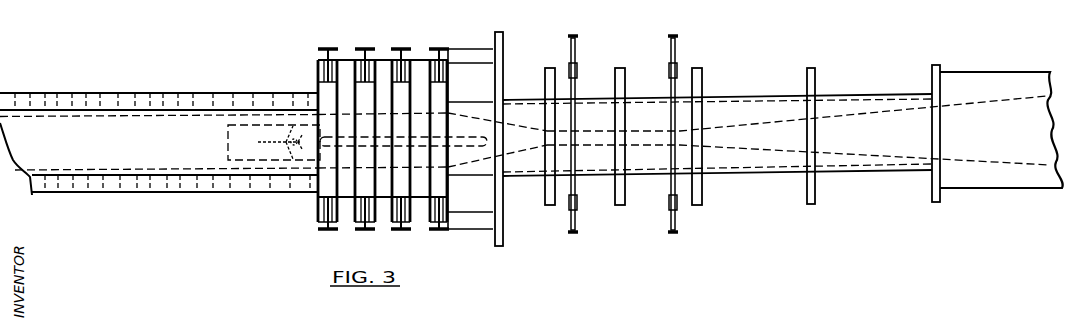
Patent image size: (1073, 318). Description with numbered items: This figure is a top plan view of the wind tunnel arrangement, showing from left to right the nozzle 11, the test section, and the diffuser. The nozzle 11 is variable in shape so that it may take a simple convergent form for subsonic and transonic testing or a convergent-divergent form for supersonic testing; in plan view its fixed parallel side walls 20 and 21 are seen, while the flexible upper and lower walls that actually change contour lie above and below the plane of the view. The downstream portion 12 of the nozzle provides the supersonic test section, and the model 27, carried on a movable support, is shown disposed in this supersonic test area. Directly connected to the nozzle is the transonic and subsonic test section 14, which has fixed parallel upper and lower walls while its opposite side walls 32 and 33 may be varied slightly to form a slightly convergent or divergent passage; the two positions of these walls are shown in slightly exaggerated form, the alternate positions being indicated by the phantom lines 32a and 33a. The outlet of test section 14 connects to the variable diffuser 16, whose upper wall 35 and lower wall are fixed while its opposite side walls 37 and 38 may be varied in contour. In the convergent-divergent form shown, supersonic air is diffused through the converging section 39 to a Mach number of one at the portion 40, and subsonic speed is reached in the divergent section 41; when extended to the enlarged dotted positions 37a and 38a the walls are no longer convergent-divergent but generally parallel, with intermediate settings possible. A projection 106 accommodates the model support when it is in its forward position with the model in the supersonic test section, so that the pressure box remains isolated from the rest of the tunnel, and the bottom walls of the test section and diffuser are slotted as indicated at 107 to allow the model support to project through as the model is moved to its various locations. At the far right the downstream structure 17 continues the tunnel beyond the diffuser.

The nozzle 11 is at (103, 89).
The downstream portion of the variable nozzle 12 is at (223, 91).
The transonic and subsonic test section 14 is at (361, 42).
The variable diffuser 16 is at (648, 90).
The end housing 17 is at (988, 70).
The side wall 20 is at (158, 117).
The side wall 21 is at (116, 170).
The model 27 is at (291, 128).
The side wall 32 is at (420, 112).
The side wall in alternate position 32a is at (433, 115).
The side wall 33 is at (433, 168).
The side wall in alternate position 33a is at (435, 164).
The upper wall 35 is at (843, 123).
The side wall 37 is at (730, 127).
The side wall in extended position 37a is at (775, 101).
The side wall 38 is at (768, 148).
The side wall in extended position 38a is at (657, 170).
The converging section 39 is at (525, 140).
The portion 40 is at (598, 140).
The divergent section 41 is at (858, 138).
The projection 106 is at (243, 147).
The slot 107 is at (333, 145).